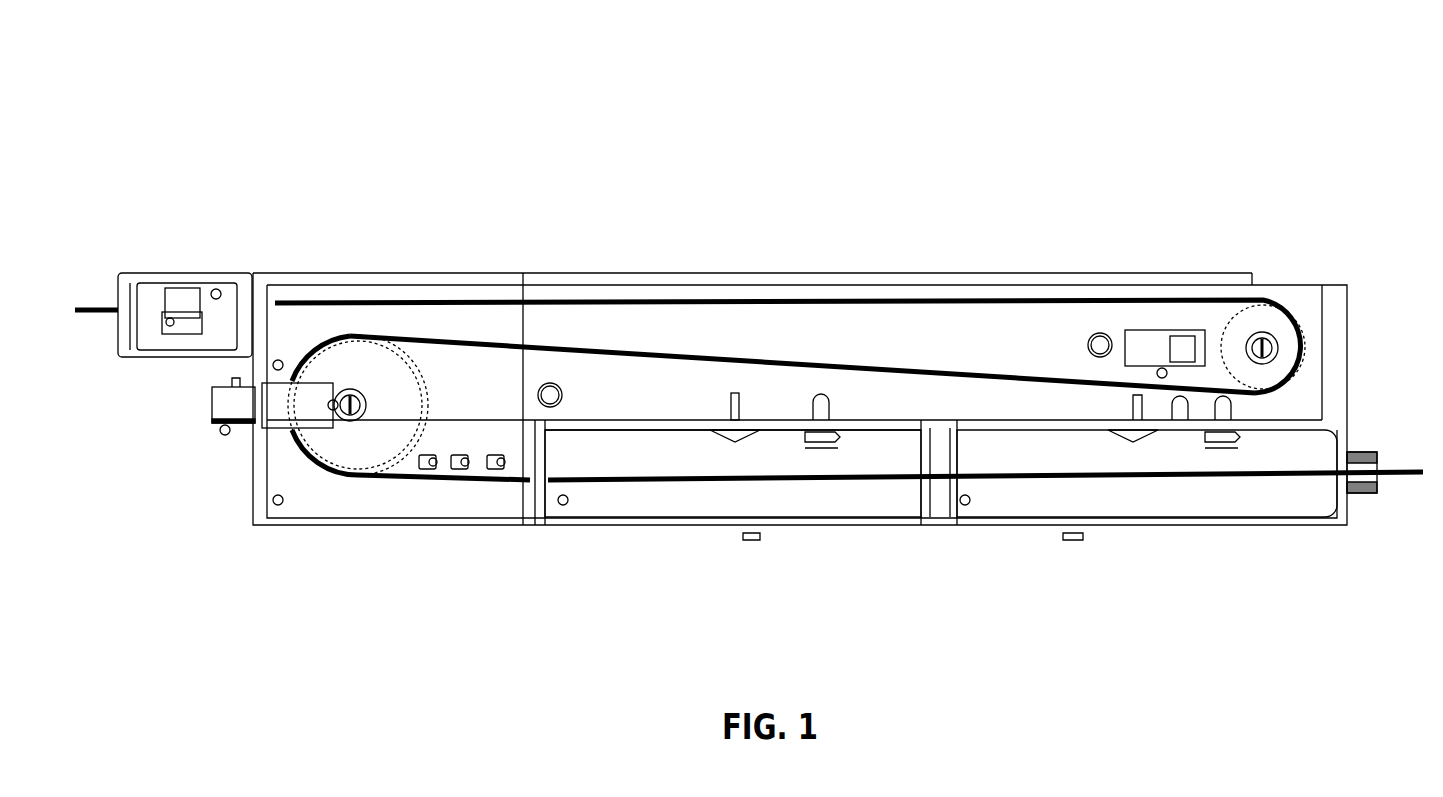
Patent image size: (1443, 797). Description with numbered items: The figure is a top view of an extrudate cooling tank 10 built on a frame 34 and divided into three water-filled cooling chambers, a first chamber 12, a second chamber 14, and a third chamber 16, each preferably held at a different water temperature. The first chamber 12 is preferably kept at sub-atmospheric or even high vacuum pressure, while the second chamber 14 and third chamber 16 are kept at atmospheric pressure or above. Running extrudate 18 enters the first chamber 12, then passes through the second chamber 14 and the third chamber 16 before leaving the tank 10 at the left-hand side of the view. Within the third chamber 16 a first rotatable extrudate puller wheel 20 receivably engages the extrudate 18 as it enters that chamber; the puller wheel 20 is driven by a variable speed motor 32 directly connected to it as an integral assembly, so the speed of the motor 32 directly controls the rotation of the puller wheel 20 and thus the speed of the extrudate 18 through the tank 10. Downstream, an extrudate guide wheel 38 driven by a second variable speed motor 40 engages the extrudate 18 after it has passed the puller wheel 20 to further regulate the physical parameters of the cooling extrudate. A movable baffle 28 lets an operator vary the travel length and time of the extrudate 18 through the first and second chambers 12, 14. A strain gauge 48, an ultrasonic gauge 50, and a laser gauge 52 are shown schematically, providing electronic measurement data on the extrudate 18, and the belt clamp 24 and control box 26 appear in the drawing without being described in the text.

The extrudate cooling tank 10 is at (873, 116).
The first chamber 12 is at (1157, 495).
The second chamber 14 is at (842, 495).
The third chamber 16 is at (598, 392).
The extrudate 18 is at (650, 300).
The first rotatable extrudate puller wheel 20 is at (330, 435).
The belt clamp 24 is at (1382, 494).
The control box 26 is at (190, 298).
The movable baffle 28 is at (940, 525).
The variable speed motor 32 is at (345, 395).
The frame 34 is at (972, 273).
The extrudate guide wheel 38 is at (1305, 345).
The second variable speed motor 40 is at (1250, 340).
The strain gauge 48 is at (428, 480).
The ultrasonic gauge 50 is at (458, 478).
The laser gauge 52 is at (497, 478).